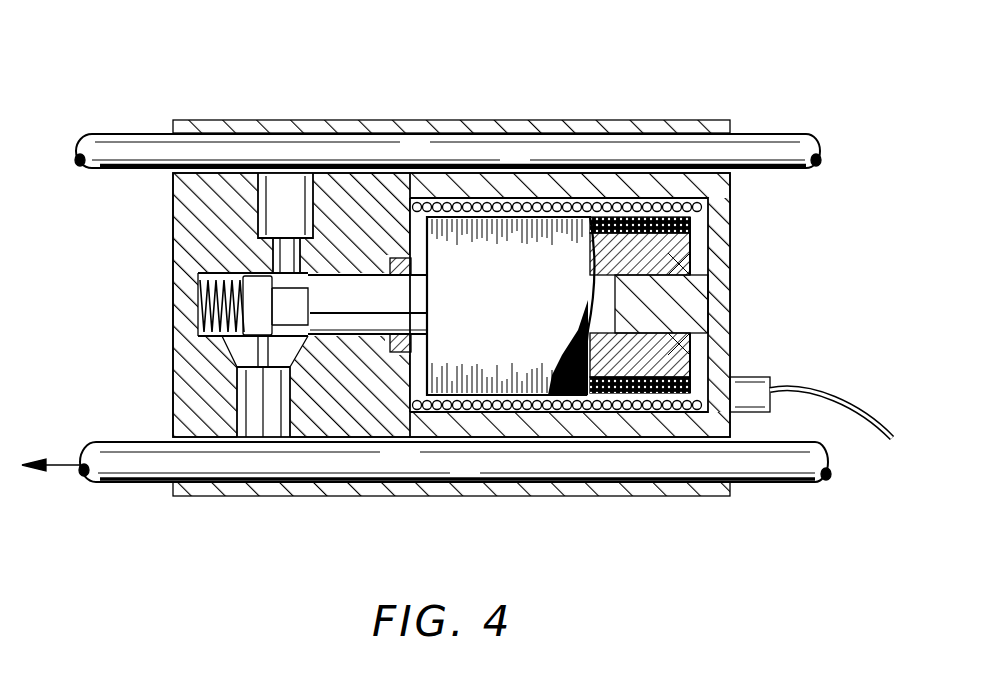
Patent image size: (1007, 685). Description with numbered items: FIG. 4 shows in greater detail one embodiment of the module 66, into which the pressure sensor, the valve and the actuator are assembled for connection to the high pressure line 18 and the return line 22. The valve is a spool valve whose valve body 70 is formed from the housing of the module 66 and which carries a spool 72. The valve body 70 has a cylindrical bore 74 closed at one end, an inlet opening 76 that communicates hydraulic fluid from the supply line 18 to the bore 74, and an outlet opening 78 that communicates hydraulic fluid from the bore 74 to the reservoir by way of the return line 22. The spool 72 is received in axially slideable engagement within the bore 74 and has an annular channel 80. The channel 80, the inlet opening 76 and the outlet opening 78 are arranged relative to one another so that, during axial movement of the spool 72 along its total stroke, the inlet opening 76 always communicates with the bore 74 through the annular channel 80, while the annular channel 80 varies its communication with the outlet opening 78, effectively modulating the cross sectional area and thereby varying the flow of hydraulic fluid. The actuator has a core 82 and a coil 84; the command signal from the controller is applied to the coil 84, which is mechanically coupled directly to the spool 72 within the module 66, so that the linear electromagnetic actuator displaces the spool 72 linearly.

The high pressure line 18 is at (130, 130).
The return line 22 is at (113, 440).
The module 66 is at (638, 116).
The valve body 70 is at (195, 212).
The spool 72 is at (347, 298).
The cylindrical bore 74 is at (200, 292).
The inlet opening 76 is at (262, 188).
The outlet opening 78 is at (240, 423).
The annular channel 80 is at (296, 305).
The core 82 is at (713, 208).
The coil 84 is at (688, 224).